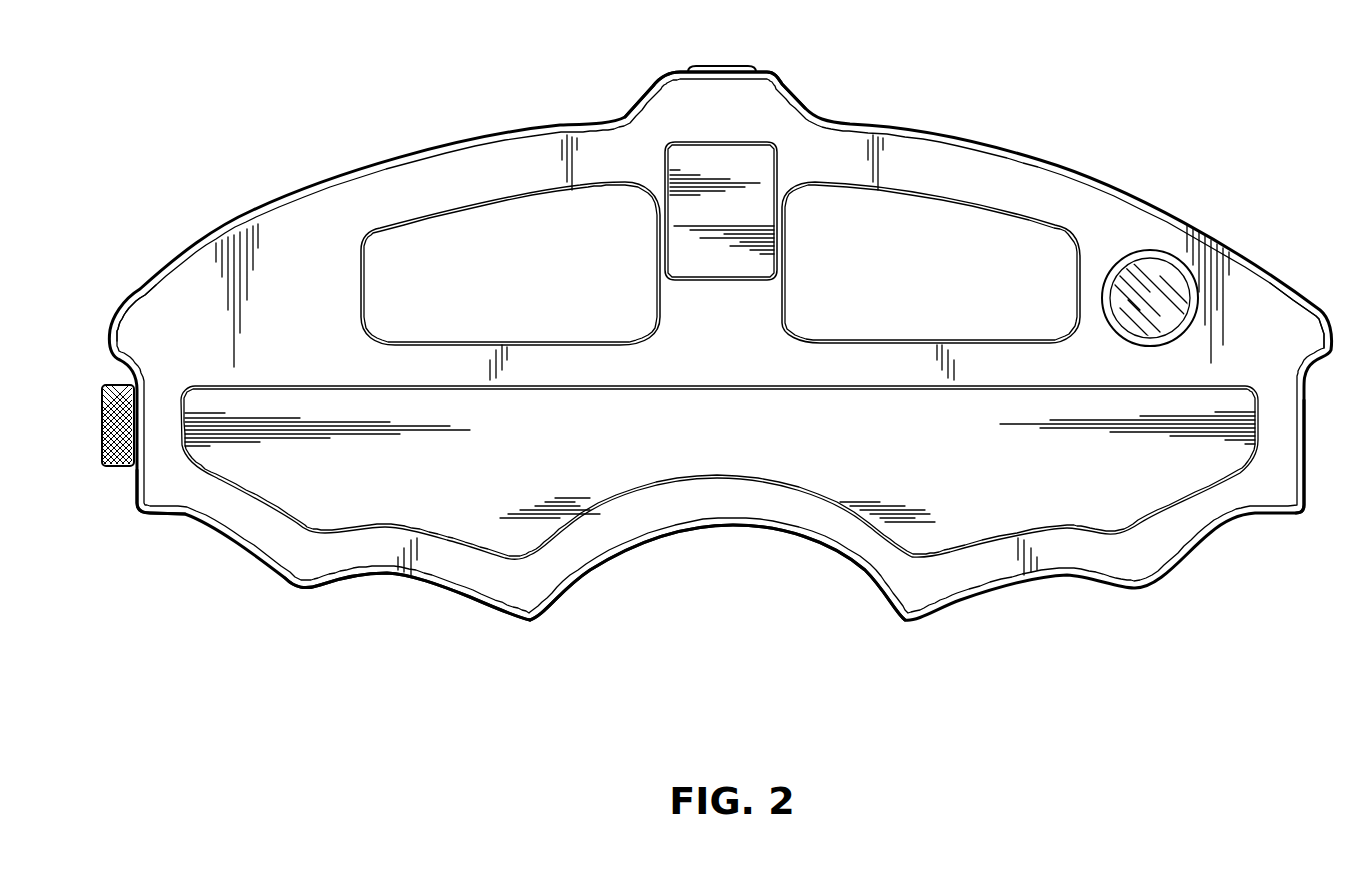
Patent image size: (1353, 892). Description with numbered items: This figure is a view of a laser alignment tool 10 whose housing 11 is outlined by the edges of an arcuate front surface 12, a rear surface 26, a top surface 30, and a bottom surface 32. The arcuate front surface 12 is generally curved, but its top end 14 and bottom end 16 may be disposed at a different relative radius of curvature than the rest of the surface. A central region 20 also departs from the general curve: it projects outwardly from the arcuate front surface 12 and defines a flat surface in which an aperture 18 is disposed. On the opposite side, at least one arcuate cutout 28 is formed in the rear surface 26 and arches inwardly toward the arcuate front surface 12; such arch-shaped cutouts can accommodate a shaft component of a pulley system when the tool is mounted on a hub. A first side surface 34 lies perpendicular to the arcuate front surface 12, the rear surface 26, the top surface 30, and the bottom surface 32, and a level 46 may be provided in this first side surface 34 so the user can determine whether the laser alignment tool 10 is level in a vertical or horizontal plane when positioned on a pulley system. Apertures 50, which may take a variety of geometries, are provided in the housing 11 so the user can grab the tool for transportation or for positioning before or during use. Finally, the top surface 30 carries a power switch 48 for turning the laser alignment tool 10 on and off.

The laser alignment tool 10 is at (249, 125).
The housing 11 is at (174, 484).
The arcuate front surface 12 is at (481, 130).
The top end 14 is at (108, 333).
The bottom end 16 is at (1330, 331).
The aperture 18 is at (720, 64).
The central region 20 is at (764, 70).
The rear surface 26 is at (422, 581).
The arcuate cutout 28 is at (731, 538).
The top surface 30 is at (132, 488).
The bottom surface 32 is at (1305, 461).
The first side surface 34 is at (306, 308).
The level 46 is at (1165, 276).
The power switch 48 is at (102, 420).
The apertures 50 is at (531, 288).